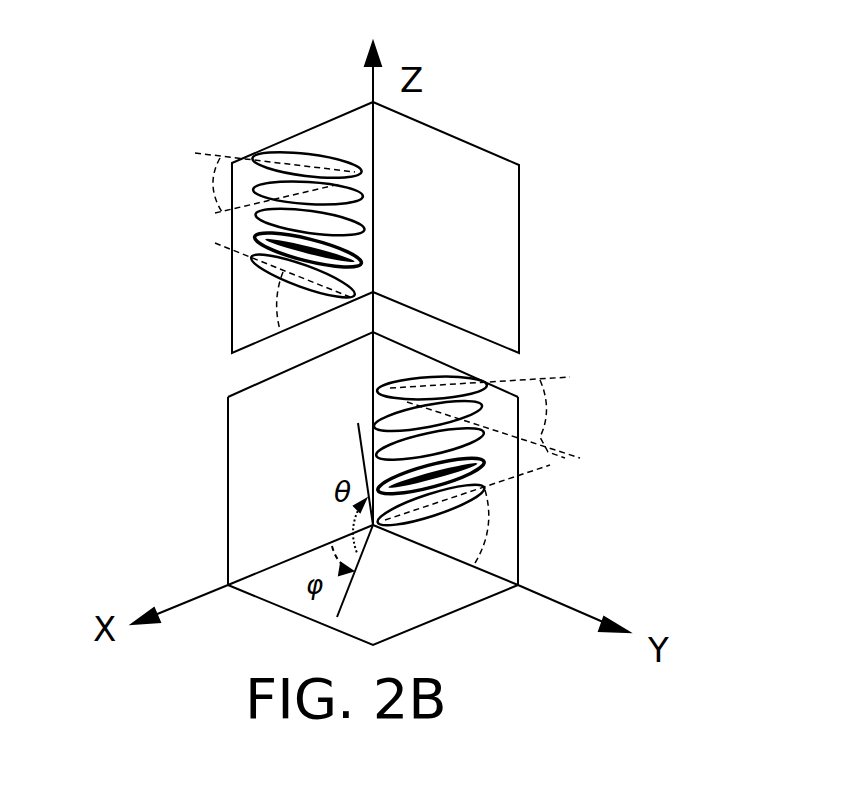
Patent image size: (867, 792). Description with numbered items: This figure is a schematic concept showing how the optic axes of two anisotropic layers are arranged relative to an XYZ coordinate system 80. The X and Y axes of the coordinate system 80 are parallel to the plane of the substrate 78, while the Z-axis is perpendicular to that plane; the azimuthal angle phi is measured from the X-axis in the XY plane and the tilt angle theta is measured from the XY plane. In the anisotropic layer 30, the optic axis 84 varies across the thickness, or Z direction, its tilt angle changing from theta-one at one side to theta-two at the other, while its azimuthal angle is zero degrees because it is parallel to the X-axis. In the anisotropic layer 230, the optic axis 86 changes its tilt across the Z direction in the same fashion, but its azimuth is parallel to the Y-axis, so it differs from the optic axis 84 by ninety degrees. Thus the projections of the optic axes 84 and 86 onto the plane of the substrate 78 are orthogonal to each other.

The first anisotropic layer 30 is at (333, 140).
The XYZ coordinate system 80 is at (435, 70).
The optic axis 84 is at (250, 238).
The optic axis 86 is at (483, 461).
The anisotropic layer 230 is at (510, 503).
The substrate 78 is at (437, 627).